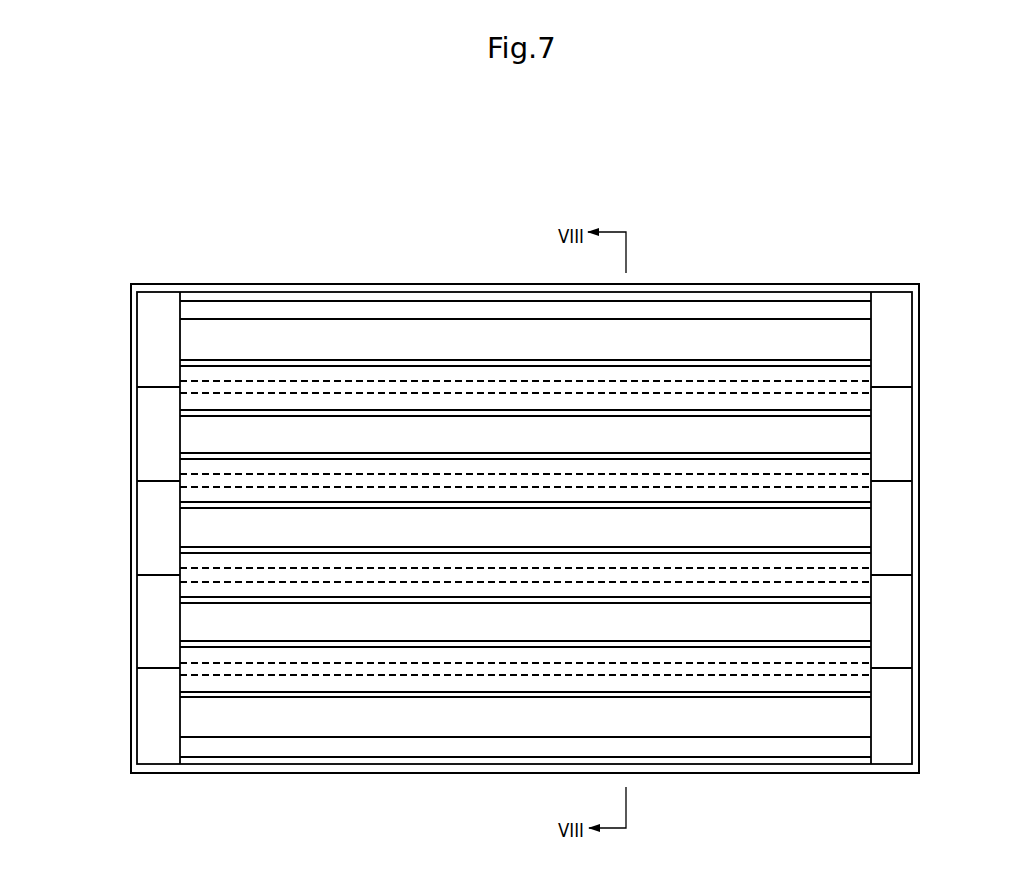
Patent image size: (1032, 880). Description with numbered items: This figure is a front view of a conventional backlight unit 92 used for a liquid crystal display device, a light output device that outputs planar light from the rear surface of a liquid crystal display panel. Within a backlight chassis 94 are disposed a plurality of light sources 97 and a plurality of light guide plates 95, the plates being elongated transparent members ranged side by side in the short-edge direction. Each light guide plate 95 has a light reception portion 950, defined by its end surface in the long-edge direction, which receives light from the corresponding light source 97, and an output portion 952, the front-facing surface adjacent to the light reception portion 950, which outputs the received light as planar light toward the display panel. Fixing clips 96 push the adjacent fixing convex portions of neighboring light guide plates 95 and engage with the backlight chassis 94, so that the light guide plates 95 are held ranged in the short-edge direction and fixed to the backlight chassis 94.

The backlight unit 92 is at (167, 257).
The backlight chassis 94 is at (288, 770).
The light guide plate 95 is at (700, 623).
The light reception portion 950 is at (181, 333).
The output portion 952 is at (305, 333).
The fixing clip 96 is at (213, 387).
The light source 97 is at (145, 339).